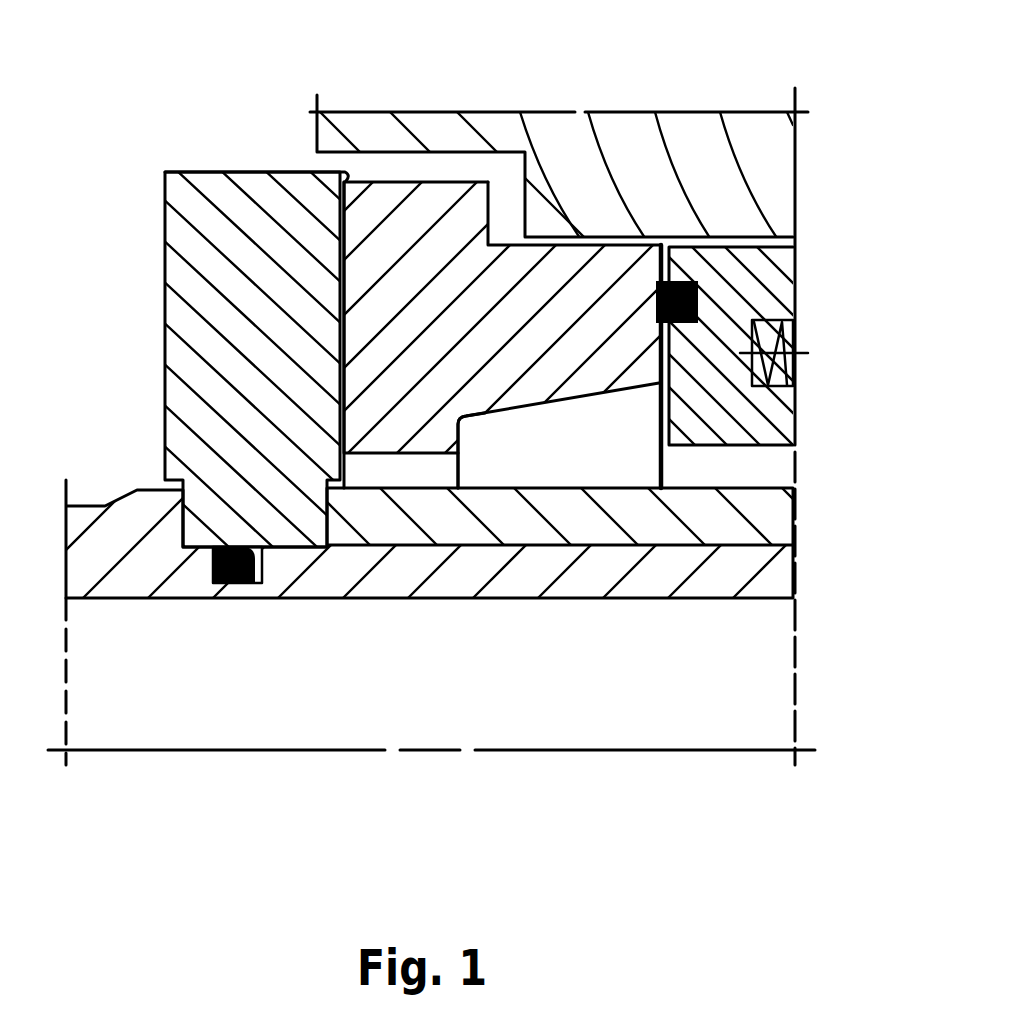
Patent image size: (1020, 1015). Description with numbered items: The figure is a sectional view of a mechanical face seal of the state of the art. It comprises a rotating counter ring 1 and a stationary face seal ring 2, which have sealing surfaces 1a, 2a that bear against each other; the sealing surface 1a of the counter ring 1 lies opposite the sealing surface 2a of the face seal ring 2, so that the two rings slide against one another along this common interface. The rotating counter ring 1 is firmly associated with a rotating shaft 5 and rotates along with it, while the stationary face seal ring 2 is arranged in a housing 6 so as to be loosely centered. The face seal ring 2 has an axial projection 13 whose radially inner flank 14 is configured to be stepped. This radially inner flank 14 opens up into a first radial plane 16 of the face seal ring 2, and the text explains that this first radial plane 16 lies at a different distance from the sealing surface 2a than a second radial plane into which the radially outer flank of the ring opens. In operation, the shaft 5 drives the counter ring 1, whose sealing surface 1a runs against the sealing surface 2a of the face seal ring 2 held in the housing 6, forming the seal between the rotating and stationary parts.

The counter ring 1 is at (180, 312).
The sealing surface 1a is at (344, 177).
The face seal ring 2 is at (380, 203).
The sealing surface 2a is at (347, 228).
The rotating shaft 5 is at (123, 520).
The housing 6 is at (627, 133).
The axial projection 13 is at (543, 300).
The radially inner flank 14 is at (545, 400).
The first radial plane 16 is at (462, 442).